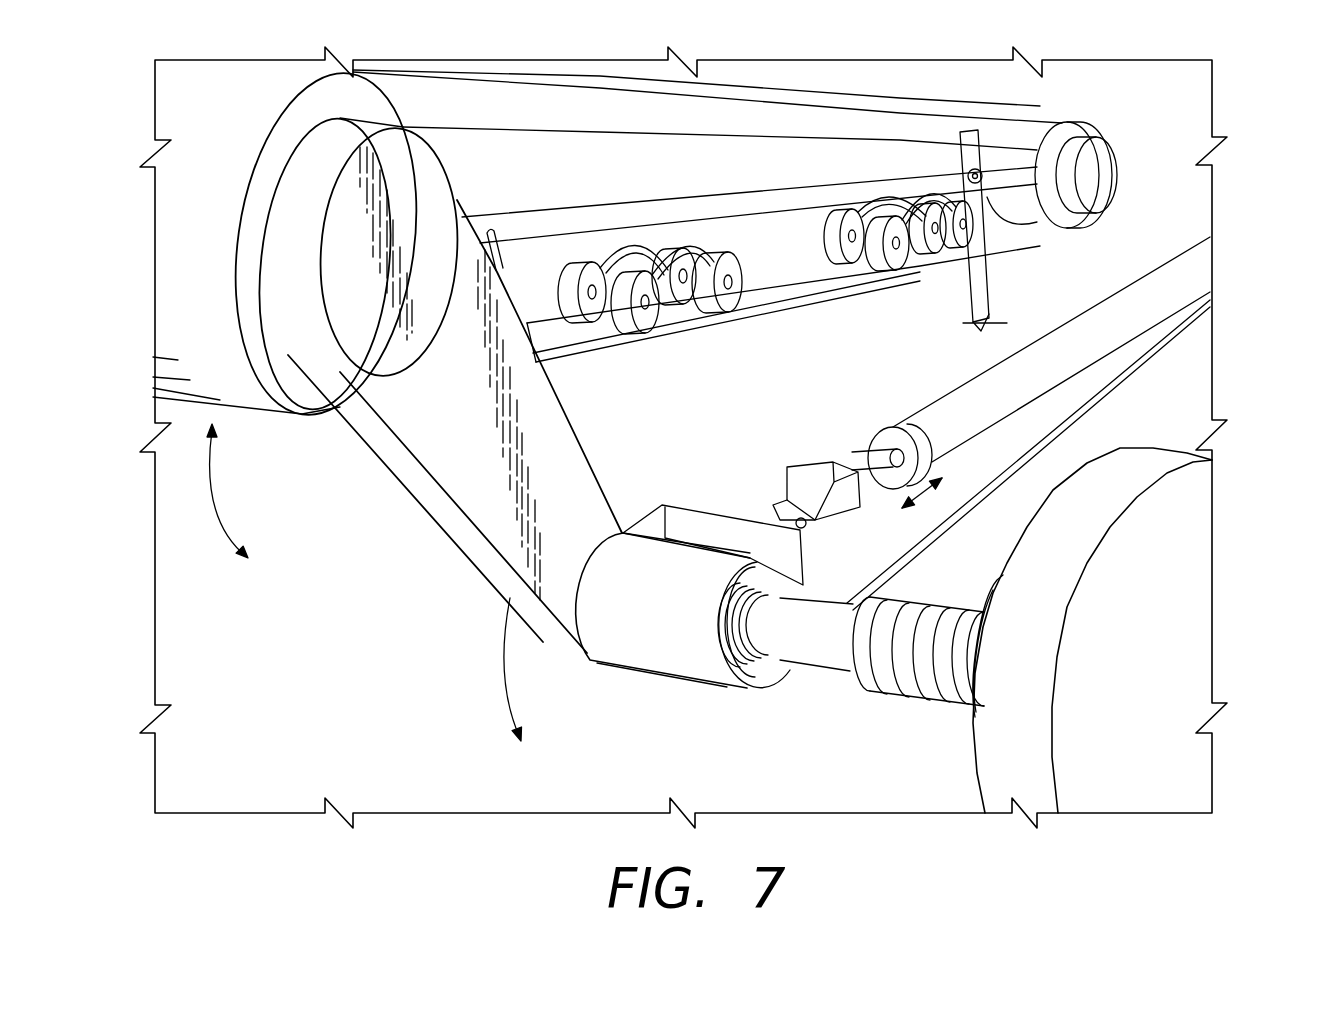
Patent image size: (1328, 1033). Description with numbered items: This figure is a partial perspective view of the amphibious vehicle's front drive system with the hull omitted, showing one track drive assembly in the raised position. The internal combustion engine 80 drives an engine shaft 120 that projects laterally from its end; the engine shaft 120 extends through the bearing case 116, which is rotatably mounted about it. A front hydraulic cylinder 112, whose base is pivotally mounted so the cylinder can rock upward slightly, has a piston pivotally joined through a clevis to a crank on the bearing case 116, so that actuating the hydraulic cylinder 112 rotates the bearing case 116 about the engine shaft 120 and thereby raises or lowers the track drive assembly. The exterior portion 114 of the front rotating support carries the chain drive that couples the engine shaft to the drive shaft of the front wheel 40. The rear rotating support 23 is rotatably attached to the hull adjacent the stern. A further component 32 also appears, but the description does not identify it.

The rear rotating support 23 is at (977, 137).
The conveyor 32 is at (710, 160).
The front wheel 40 is at (280, 405).
The engine 80 is at (1198, 583).
The front hydraulic cylinder 112 is at (923, 410).
The exterior portion of front rotating support 114 is at (413, 487).
The bearing case 116 is at (640, 673).
The engine shaft 120 is at (897, 688).